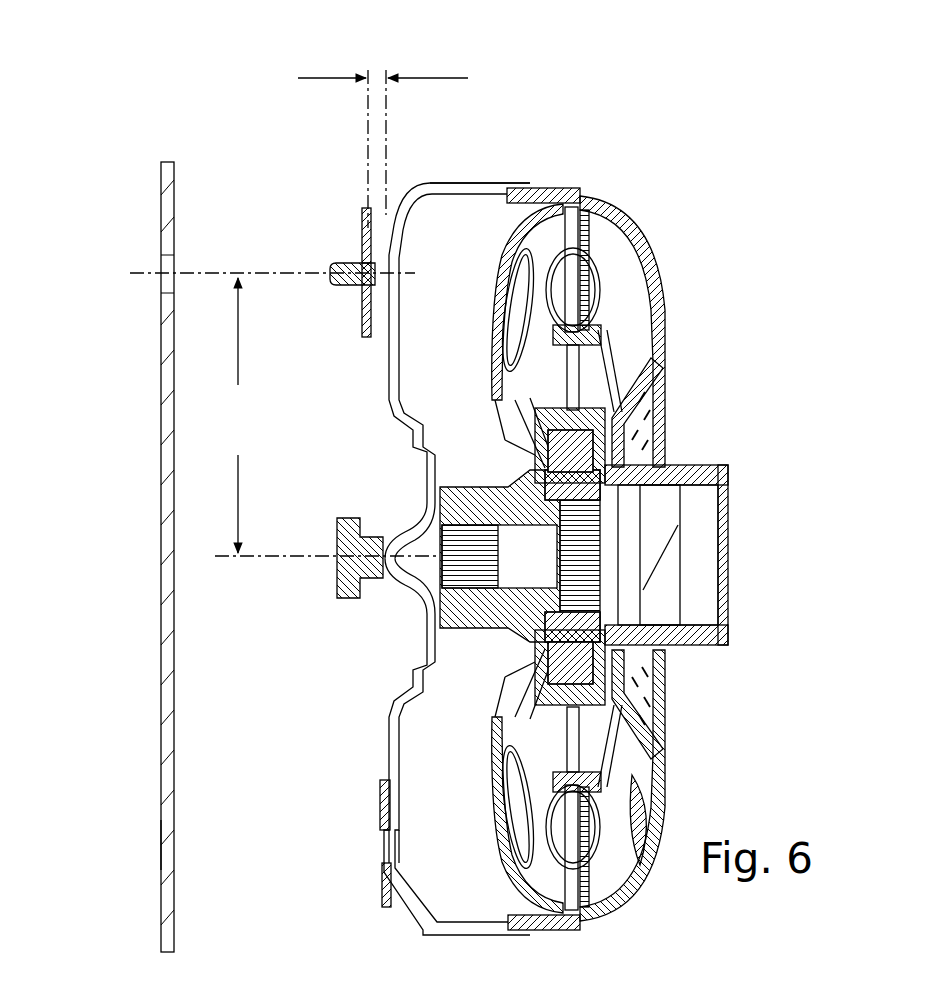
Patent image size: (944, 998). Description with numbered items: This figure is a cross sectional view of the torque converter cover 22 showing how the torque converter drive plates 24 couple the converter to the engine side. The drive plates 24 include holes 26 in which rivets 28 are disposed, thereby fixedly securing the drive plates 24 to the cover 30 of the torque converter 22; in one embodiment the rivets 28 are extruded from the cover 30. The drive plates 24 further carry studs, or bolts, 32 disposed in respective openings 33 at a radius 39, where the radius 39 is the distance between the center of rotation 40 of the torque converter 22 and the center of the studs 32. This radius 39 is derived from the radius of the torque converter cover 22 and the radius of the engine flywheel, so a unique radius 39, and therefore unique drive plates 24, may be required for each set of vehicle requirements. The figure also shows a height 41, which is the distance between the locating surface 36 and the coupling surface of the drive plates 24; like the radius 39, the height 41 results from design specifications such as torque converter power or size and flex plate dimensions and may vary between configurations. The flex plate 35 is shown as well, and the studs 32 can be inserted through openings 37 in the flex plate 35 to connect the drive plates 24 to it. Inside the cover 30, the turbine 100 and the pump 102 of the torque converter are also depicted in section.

The torque converter cover 22 is at (705, 79).
The torque converter drive plates 24 is at (362, 297).
The holes 26 is at (382, 800).
The rivets 28 is at (388, 845).
The cover 30 is at (420, 925).
The studs 32 is at (340, 265).
The openings 33 is at (360, 265).
The flex plate 35 is at (127, 845).
The locating surface 36 is at (672, 970).
The openings 37 is at (160, 267).
The radius 39 is at (285, 414).
The center of rotation 40 is at (323, 556).
The height 41 is at (386, 135).
The turbine 100 is at (540, 242).
The pump 102 is at (620, 272).